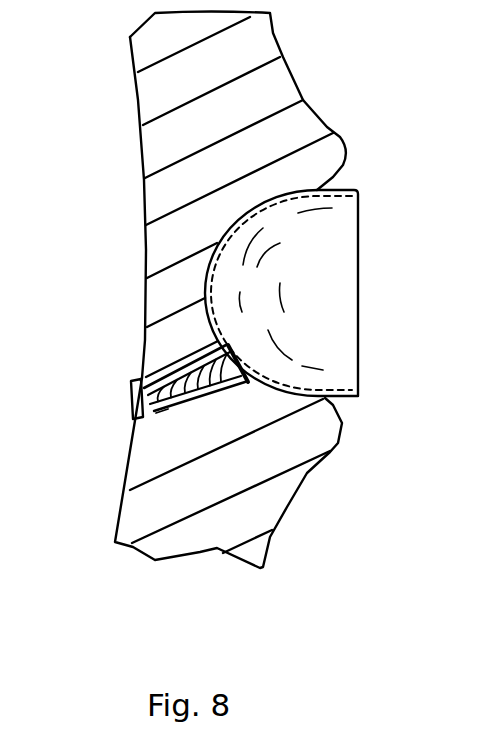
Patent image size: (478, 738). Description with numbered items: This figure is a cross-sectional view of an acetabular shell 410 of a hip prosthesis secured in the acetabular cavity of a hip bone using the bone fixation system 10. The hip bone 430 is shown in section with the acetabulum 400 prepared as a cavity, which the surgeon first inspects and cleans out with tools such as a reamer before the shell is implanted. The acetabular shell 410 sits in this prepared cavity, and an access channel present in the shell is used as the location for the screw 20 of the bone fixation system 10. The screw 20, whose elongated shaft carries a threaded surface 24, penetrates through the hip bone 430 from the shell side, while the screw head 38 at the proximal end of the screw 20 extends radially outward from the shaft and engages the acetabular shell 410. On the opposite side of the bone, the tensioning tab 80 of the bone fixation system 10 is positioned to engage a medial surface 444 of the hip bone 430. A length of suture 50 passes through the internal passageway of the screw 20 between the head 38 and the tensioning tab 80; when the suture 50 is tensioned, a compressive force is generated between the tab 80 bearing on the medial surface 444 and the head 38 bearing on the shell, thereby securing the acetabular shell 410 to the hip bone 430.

The hip bone 430 is at (155, 85).
The acetabular shell 410 is at (345, 188).
The acetabulum 400 is at (343, 418).
The bone fixation system 10 is at (168, 424).
The screw 20 is at (199, 362).
The threaded surface 24 is at (195, 398).
The screw head 38 is at (238, 387).
The length of suture 50 is at (131, 409).
The tensioning tab 80 is at (128, 390).
The medial surface 444 is at (158, 424).